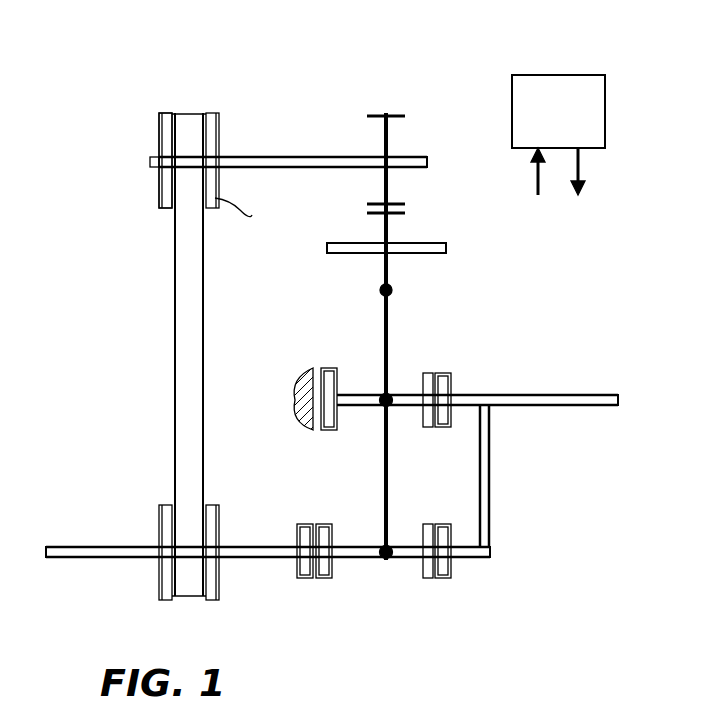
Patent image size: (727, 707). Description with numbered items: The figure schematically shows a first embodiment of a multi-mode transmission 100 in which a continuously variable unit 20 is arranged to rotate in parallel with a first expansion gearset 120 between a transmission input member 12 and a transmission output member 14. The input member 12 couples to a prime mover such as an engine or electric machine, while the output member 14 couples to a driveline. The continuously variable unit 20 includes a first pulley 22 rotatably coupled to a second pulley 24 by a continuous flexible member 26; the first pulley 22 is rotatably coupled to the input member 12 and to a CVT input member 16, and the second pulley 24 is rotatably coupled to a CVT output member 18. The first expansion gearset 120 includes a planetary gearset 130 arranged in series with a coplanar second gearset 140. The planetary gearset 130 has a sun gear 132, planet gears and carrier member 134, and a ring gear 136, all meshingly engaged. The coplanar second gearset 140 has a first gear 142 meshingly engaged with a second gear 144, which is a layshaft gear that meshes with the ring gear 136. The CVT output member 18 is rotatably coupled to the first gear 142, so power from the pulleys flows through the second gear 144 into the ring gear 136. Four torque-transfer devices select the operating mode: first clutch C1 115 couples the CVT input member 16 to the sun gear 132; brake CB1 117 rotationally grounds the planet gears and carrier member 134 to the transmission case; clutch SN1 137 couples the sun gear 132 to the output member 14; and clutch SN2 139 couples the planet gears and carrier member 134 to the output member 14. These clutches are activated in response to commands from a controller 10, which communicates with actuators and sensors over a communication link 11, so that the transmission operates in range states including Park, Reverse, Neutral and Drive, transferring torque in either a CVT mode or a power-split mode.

The multi-mode transmission 100 is at (108, 96).
The controller 10 is at (573, 124).
The communication link 11 is at (582, 163).
The transmission input member 12 is at (88, 546).
The transmission output member 14 is at (534, 395).
The CVT input member 16 is at (273, 558).
The CVT output member 18 is at (320, 156).
The continuously variable unit 20 is at (190, 112).
The first pulley 22 is at (159, 517).
The second pulley 24 is at (160, 189).
The continuous flexible member 26 is at (175, 343).
The first clutch C1 115 is at (312, 579).
The brake CB1 117 is at (330, 432).
The first expansion gearset 120 is at (465, 100).
The planetary gearset 130 is at (388, 560).
The sun gear 132 is at (384, 548).
The planet gears and carrier member 134 is at (384, 398).
The ring gear 136 is at (383, 291).
The clutch SN1 137 is at (452, 569).
The clutch SN2 139 is at (437, 373).
The coplanar second gearset 140 is at (386, 112).
The first gear 142 is at (417, 156).
The second gear 144 is at (426, 243).